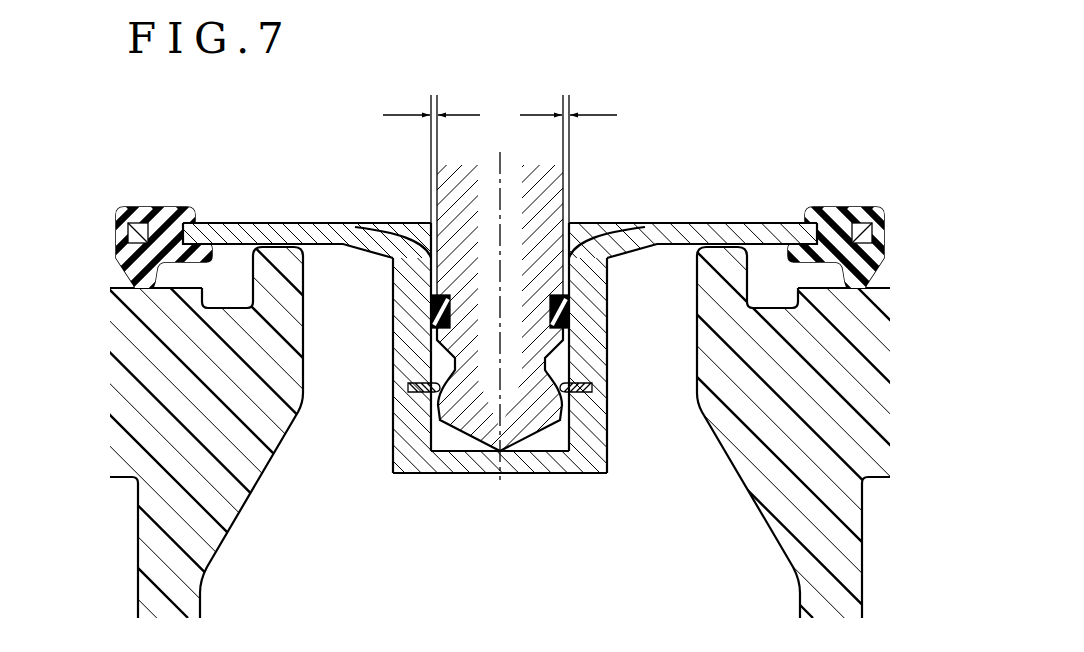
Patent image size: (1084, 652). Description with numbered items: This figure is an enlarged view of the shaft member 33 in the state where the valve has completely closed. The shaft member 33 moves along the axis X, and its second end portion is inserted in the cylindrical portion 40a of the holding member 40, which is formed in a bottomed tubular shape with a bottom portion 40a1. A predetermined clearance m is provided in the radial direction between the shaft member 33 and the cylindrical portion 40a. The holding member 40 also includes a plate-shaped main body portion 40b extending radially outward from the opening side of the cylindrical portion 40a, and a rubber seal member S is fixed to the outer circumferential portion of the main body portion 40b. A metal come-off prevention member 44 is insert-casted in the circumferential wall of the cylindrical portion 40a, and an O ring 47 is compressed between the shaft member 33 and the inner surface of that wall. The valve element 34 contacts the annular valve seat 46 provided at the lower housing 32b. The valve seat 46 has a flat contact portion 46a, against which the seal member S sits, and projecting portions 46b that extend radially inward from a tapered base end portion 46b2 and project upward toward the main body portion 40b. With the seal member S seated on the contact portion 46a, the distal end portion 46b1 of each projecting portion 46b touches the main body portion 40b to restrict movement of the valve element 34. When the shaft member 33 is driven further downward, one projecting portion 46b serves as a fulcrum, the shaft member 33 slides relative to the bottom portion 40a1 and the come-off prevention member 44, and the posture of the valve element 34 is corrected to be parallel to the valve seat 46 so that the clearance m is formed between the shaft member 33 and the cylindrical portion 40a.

The seal member S is at (140, 207).
The valve seat 46 is at (542, 392).
The lower housing 32b is at (542, 392).
The contact portion 46a is at (118, 287).
The projecting portion 46b is at (501, 279).
The distal end portion 46b1 is at (279, 247).
The base end portion 46b2 is at (213, 540).
The holding member 40 is at (501, 351).
The main body portion 40b is at (267, 222).
The cylindrical portion 40a is at (500, 394).
The bottom portion 40a1 is at (475, 463).
The shaft member 33 is at (437, 198).
The valve element 34 is at (627, 202).
The O ring 47 is at (570, 307).
The come-off prevention member 44 is at (407, 388).
The axis X is at (498, 301).
The predetermined clearance m is at (500, 155).